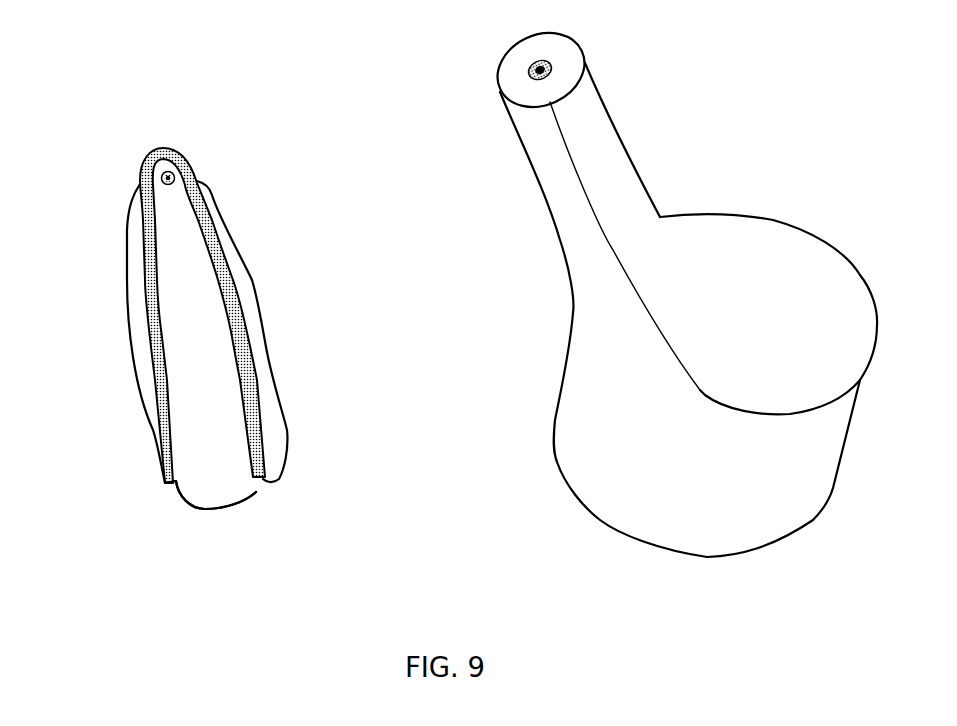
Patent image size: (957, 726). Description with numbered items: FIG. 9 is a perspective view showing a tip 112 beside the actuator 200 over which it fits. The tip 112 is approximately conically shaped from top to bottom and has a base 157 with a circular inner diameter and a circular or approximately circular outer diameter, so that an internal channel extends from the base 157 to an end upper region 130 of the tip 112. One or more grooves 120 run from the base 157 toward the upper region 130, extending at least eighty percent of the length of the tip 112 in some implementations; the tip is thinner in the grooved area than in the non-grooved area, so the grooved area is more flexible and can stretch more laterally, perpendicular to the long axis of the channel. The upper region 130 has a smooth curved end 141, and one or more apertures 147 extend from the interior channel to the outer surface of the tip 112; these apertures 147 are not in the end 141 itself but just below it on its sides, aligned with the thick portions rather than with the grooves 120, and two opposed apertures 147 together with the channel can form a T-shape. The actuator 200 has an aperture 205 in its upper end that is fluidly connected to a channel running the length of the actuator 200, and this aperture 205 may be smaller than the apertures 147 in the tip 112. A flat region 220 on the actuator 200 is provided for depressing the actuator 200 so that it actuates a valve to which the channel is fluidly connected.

The tip 112 is at (121, 131).
The grooves 120 is at (264, 443).
The upper region 130 is at (120, 165).
The smooth curved end 141 is at (182, 148).
The apertures 147 is at (178, 176).
The base 157 is at (125, 427).
The actuator 200 is at (669, 288).
The aperture 205 is at (530, 64).
The flat region 220 is at (768, 314).